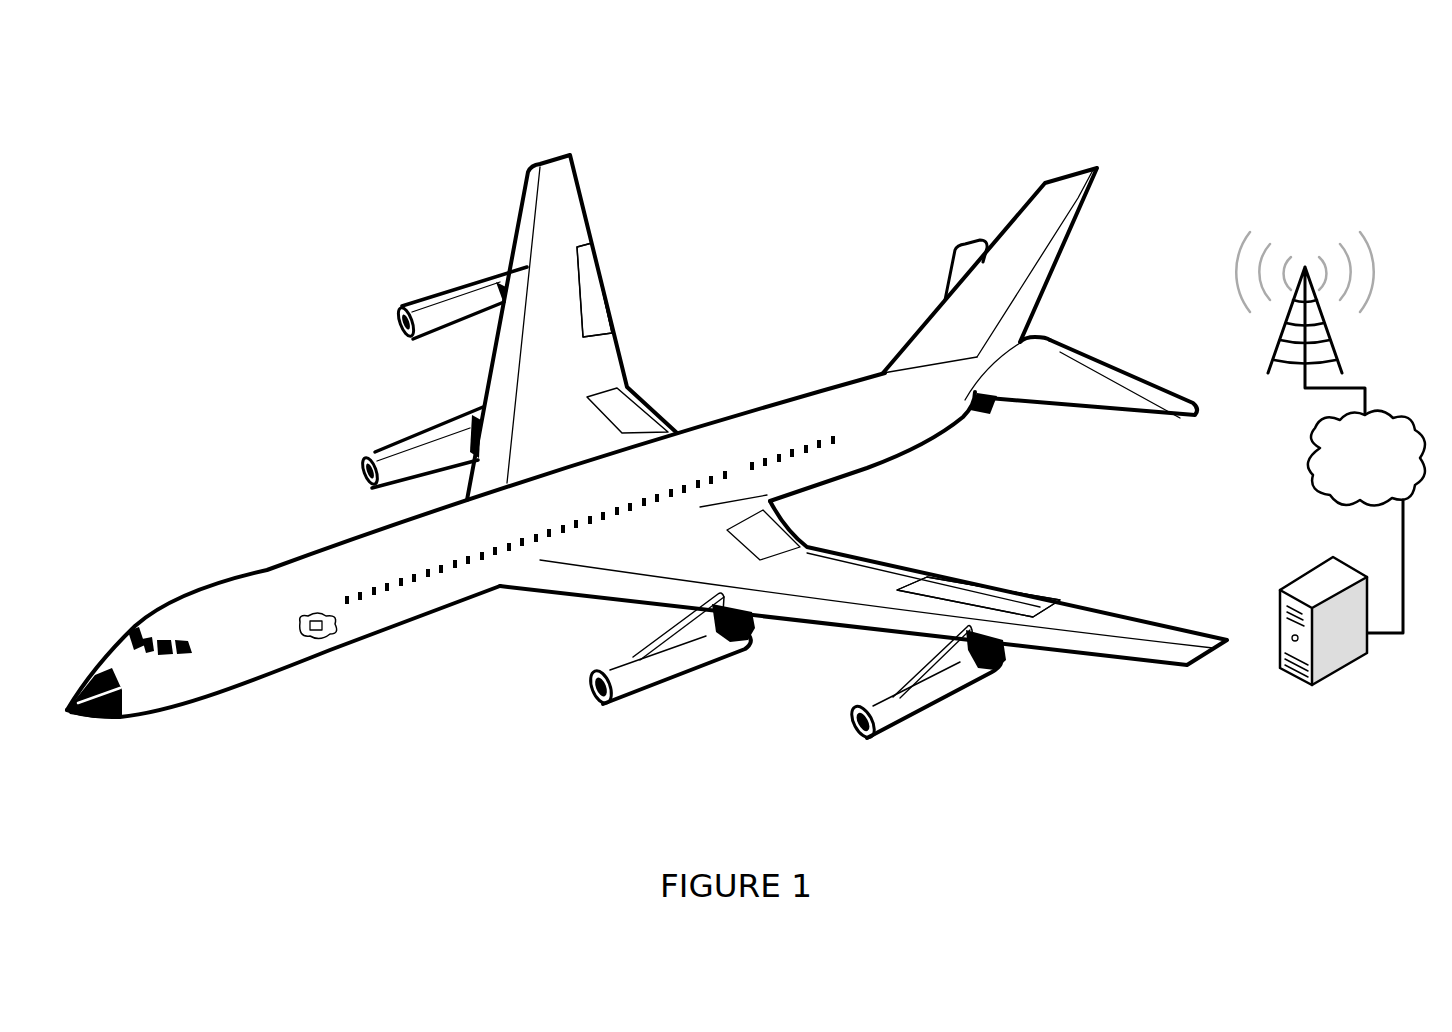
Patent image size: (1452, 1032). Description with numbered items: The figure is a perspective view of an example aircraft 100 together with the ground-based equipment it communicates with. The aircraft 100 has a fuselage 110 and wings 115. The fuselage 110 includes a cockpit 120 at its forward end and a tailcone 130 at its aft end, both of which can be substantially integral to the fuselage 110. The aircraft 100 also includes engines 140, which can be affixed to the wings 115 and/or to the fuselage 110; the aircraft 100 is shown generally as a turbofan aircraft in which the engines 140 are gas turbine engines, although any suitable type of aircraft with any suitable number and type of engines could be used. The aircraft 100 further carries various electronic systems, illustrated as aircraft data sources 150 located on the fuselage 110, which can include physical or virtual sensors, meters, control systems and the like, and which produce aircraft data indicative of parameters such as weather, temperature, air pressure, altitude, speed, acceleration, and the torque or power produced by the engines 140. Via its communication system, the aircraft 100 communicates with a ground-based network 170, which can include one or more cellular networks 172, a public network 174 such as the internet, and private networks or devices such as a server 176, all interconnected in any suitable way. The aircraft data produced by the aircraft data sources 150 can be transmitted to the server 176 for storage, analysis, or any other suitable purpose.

The aircraft 100 is at (150, 245).
The fuselage 110 is at (421, 662).
The wings 115 is at (590, 240).
The cockpit 120 is at (133, 614).
The tailcone 130 is at (1012, 413).
The engines 140 is at (408, 410).
The aircraft data sources 150 is at (311, 618).
The ground-based network 170 is at (1338, 154).
The cellular networks 172 is at (1330, 337).
The public network 174 is at (1391, 481).
The server 176 is at (1310, 570).